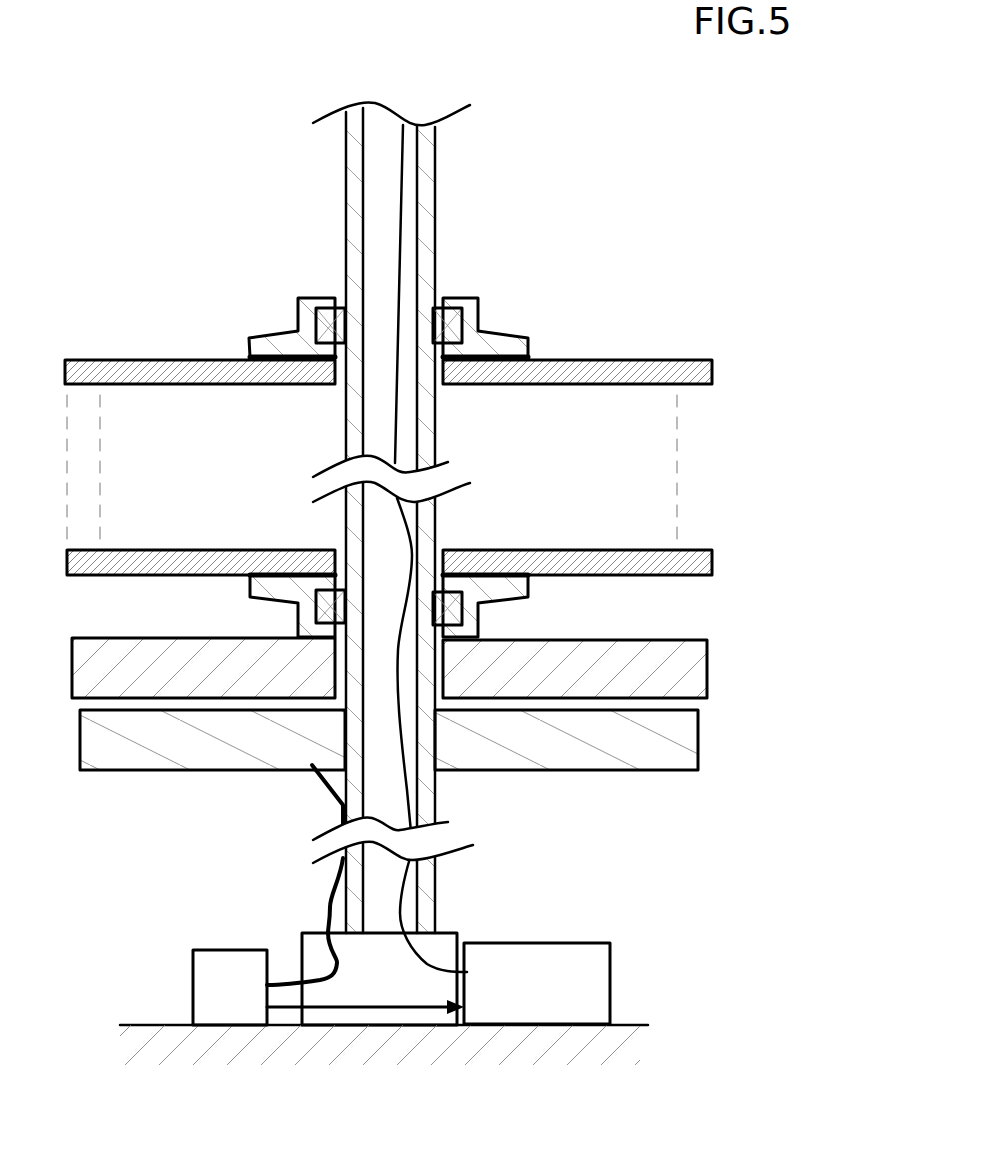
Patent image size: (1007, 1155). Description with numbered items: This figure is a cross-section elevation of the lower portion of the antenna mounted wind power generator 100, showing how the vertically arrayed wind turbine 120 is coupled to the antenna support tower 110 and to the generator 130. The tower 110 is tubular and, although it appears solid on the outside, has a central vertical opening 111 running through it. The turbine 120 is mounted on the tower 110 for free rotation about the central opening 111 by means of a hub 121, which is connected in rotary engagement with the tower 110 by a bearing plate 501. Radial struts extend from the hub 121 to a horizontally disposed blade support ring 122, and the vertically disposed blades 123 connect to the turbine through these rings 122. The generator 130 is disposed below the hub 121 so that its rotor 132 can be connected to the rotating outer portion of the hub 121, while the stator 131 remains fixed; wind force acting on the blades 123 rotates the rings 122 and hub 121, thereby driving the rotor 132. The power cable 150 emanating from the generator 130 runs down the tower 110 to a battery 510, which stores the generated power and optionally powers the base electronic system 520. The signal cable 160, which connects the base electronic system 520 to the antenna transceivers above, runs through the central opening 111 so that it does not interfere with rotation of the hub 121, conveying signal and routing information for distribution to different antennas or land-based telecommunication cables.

The antenna mounted wind power generator 100 is at (238, 125).
The antenna support tower 110 is at (320, 212).
The central vertical opening 111 is at (384, 196).
The vertically arrayed wind turbine 120 is at (203, 300).
The hub 121 is at (527, 347).
The blade support ring 122 is at (200, 540).
The blade 123 is at (712, 498).
The generator 130 is at (748, 655).
The stator 131 is at (213, 770).
The rotor 132 is at (220, 680).
The power cable 150 is at (323, 933).
The signal cable 160 is at (410, 898).
The bearing plate 501 is at (457, 310).
The battery 510 is at (210, 997).
The base electronic system 520 is at (500, 998).